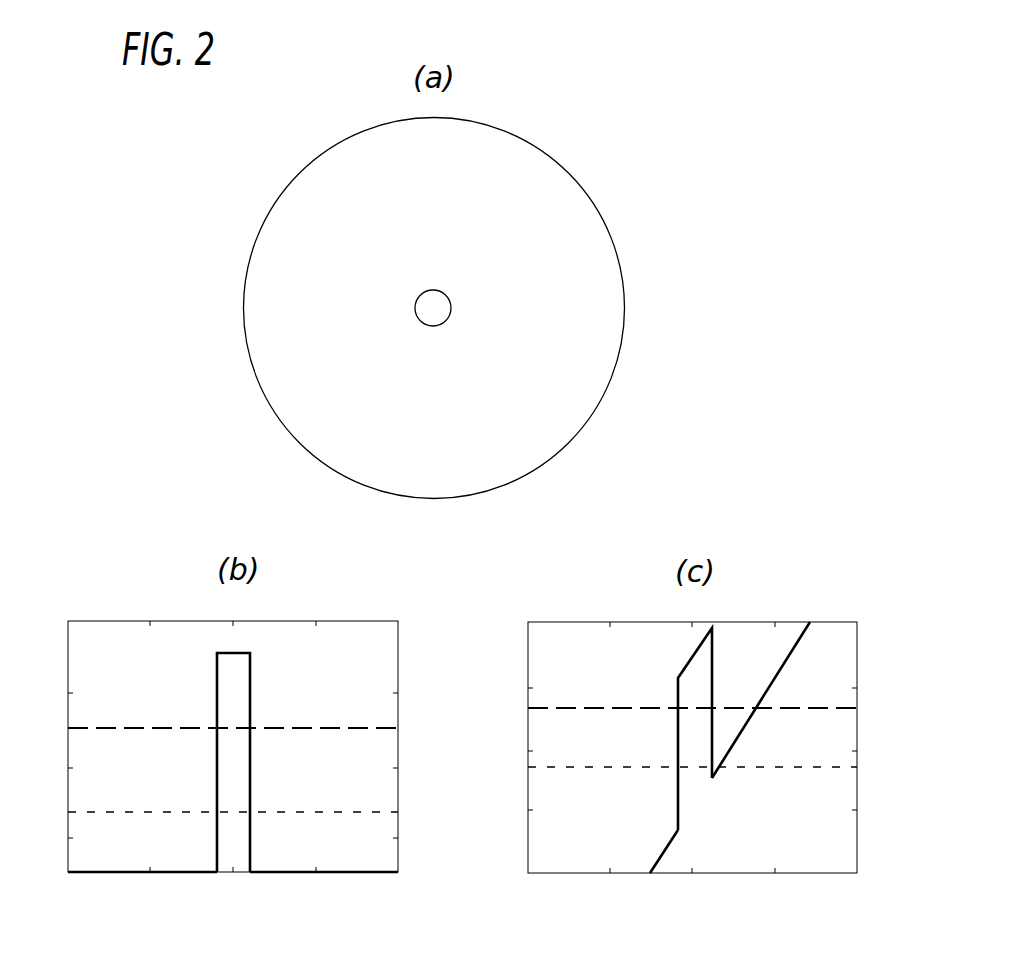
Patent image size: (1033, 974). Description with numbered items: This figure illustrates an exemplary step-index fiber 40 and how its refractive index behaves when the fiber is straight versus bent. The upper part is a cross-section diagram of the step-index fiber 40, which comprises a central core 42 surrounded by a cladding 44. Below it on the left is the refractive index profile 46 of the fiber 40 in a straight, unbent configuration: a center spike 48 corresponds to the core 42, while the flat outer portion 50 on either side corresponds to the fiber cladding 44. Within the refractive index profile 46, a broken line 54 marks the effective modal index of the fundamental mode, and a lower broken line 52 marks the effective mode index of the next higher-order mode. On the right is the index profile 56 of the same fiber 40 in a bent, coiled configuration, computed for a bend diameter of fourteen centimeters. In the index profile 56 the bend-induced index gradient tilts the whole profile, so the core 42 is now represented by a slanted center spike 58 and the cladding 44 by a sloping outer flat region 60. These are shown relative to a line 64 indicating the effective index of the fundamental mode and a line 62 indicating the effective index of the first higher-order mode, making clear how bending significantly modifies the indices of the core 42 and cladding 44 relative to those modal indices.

The step-index fiber 40 is at (463, 308).
The core 42 is at (445, 303).
The cladding 44 is at (600, 308).
The refractive index profile 46 is at (217, 749).
The center spike 48 is at (240, 648).
The flat outer portion 50 is at (128, 868).
The broken line 52 is at (303, 810).
The broken line 54 is at (307, 727).
The index profile 56 is at (683, 747).
The center spike 58 is at (690, 660).
The outer flat region 60 is at (782, 668).
The line 62 is at (767, 770).
The line 64 is at (797, 713).